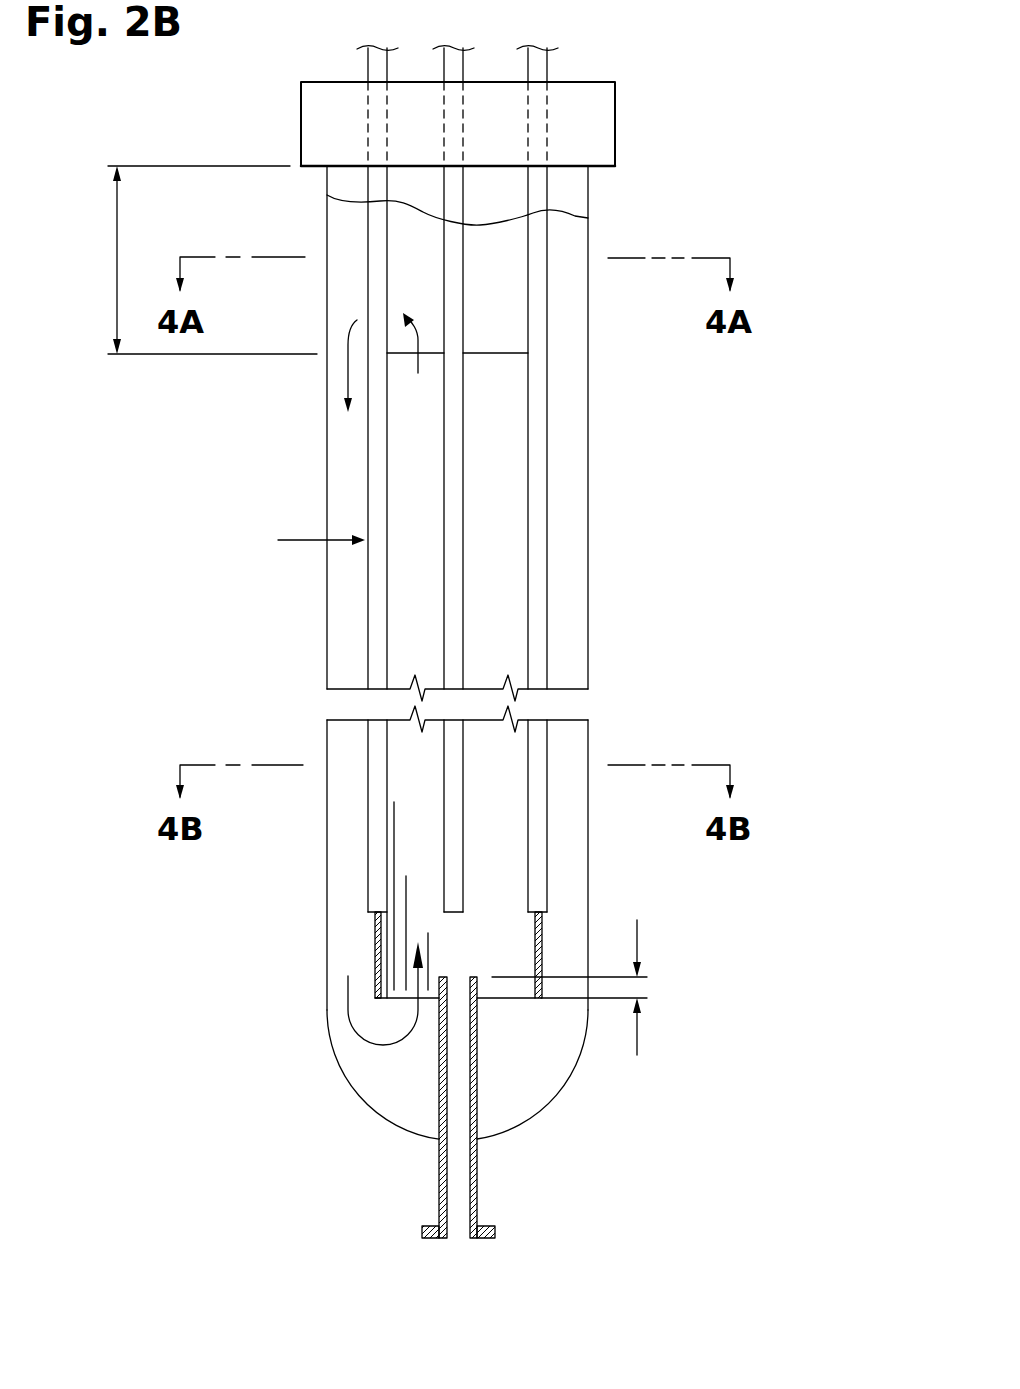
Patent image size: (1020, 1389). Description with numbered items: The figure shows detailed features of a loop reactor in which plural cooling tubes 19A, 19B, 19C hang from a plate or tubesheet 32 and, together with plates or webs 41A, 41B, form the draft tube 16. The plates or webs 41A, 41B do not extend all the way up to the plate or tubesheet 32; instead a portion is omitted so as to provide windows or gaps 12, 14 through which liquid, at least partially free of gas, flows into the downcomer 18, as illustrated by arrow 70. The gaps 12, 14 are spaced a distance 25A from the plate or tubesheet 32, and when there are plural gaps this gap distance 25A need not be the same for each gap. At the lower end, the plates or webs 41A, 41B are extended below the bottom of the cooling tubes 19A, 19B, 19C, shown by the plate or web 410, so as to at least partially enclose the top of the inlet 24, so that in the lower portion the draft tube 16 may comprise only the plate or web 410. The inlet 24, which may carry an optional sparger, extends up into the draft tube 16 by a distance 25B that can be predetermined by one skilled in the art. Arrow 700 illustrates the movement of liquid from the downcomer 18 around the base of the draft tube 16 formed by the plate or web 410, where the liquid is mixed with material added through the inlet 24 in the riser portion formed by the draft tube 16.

The plate or tubesheet 32 is at (587, 81).
The window or gap 12 is at (405, 248).
The window or gap 14 is at (490, 286).
The draft tube 16 is at (304, 542).
The downcomer 18 is at (350, 610).
The cooling tube 19A is at (367, 287).
The cooling tube 19B is at (465, 327).
The cooling tube 19C is at (548, 400).
The inlet 24 is at (458, 1240).
The gap distance 25A is at (206, 260).
The inlet extension distance 25B is at (575, 1005).
The plate or web 41A is at (414, 473).
The plate or web 41B is at (503, 485).
The arrow 70 is at (347, 368).
The plate or web extension 410 is at (556, 930).
The arrow 700 is at (345, 1008).